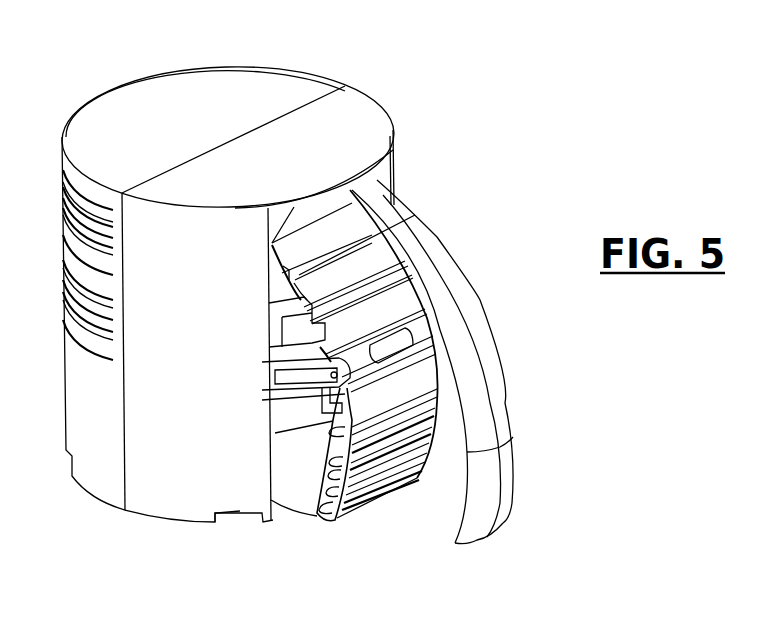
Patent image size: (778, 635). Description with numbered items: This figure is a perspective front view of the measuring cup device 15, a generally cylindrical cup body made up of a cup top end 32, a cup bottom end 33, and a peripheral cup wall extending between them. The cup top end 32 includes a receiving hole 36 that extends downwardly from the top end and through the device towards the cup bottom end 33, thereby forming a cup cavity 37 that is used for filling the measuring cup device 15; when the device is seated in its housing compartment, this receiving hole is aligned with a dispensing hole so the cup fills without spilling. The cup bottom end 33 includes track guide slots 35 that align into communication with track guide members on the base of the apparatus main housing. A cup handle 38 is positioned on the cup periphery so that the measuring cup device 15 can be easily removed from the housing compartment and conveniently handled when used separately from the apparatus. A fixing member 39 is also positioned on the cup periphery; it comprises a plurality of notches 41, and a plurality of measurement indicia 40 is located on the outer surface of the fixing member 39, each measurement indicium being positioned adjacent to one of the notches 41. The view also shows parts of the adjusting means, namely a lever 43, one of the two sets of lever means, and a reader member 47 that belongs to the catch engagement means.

The measuring cup device 15 is at (508, 101).
The cup top end 32 is at (345, 86).
The cup bottom end 33 is at (131, 510).
The track guide slots 35 is at (240, 510).
The receiving hole 36 is at (218, 68).
The cup cavity 37 is at (157, 128).
The cup handle 38 is at (490, 418).
The fixing member 39 is at (348, 273).
The measurement indicia 40 is at (392, 442).
The notches 41 is at (343, 433).
The lever 43 is at (405, 290).
The reader member 47 is at (420, 333).